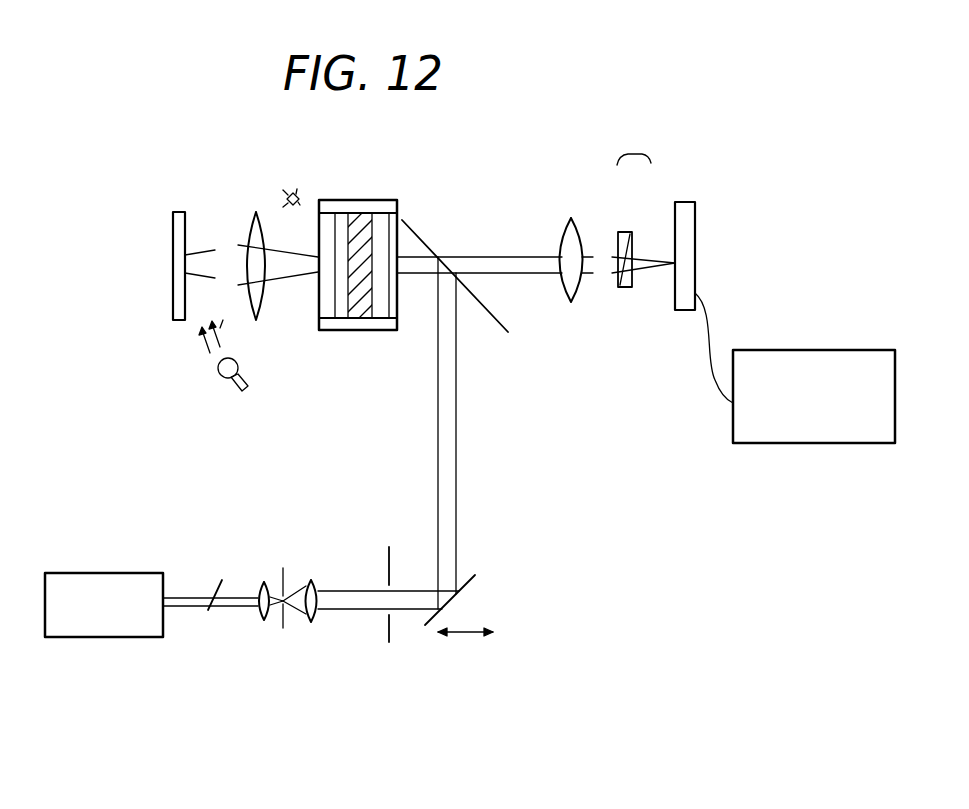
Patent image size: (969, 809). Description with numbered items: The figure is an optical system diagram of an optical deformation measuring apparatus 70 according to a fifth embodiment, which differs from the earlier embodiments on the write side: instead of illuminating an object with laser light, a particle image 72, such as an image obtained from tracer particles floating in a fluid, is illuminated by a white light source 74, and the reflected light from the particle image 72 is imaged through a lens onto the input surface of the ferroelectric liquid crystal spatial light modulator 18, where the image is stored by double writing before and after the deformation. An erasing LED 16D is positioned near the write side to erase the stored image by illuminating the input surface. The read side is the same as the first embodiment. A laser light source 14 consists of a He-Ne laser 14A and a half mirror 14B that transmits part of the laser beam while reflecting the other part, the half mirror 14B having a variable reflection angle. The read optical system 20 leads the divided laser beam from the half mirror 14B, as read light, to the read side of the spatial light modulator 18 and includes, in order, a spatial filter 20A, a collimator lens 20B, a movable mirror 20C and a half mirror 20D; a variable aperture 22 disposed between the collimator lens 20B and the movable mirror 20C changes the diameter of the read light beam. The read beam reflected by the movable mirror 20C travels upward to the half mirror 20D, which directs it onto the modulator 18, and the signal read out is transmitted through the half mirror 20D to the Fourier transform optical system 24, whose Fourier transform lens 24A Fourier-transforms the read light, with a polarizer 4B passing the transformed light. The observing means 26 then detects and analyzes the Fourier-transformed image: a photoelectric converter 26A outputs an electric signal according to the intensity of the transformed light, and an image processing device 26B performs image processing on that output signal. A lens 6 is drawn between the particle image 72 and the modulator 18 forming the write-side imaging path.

The particle image 72 is at (181, 212).
The lens 6 is at (254, 212).
The erasing LED 16D is at (300, 192).
The ferroelectric liquid crystal spatial light modulator 18 is at (363, 178).
The half mirror 20D is at (498, 327).
The Fourier transform optical system 24 is at (528, 165).
The Fourier transform lens 24A is at (572, 220).
The tilted plate / filter 4B is at (627, 231).
The photoelectric converter 26A is at (695, 208).
The image processing device 26B is at (767, 350).
The observing means 26 is at (768, 158).
The white light source 74 is at (227, 395).
The He-Ne laser 14A is at (127, 573).
The half mirror 14B is at (206, 614).
The laser light source 14 is at (235, 713).
The spatial filter 20A is at (283, 628).
The collimator lens 20B is at (317, 613).
The variable aperture 22 is at (382, 570).
The read optical system 20 is at (480, 552).
The movable mirror 20C is at (472, 580).
The optical deformation measuring apparatus 70 is at (628, 652).